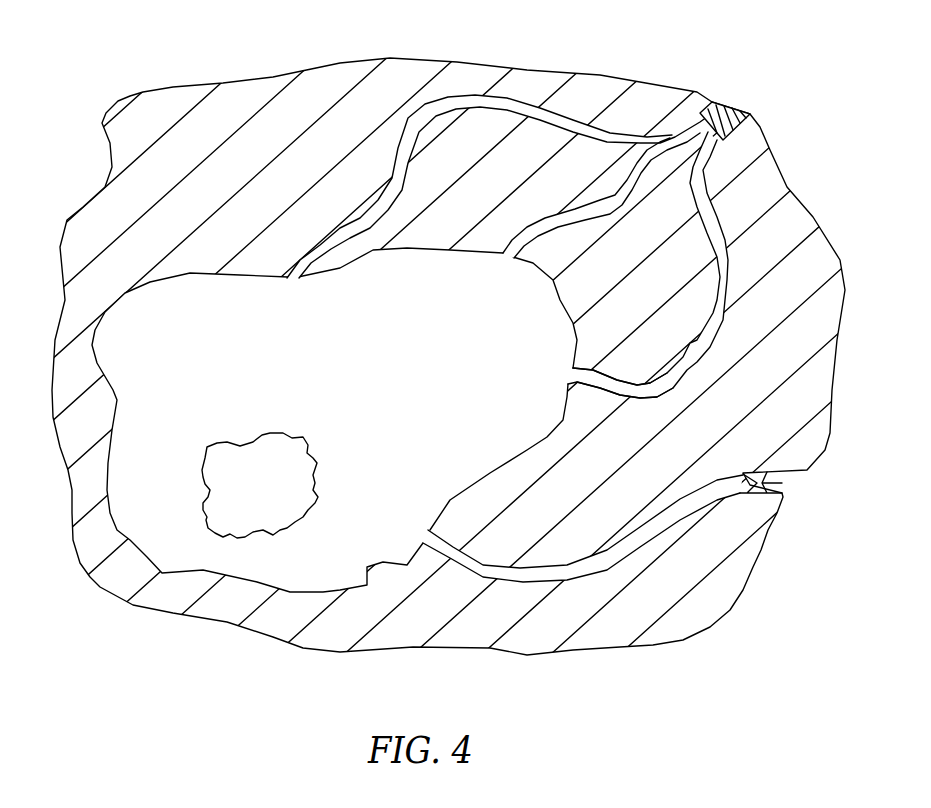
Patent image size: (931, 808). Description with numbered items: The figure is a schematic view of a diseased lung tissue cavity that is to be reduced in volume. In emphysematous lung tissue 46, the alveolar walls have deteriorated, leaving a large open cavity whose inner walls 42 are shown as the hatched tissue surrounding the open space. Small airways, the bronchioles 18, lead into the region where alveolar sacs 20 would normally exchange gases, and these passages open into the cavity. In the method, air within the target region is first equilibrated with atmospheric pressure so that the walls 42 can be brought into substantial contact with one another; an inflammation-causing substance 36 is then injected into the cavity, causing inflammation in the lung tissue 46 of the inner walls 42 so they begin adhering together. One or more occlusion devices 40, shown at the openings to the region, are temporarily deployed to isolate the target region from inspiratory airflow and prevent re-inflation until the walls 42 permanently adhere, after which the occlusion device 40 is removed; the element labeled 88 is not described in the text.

The bronchioles 18 is at (580, 293).
The alveolar sacs 20 is at (198, 262).
The inflammation-causing substance 36 is at (322, 406).
The occlusion device 40 is at (765, 90).
The cavity walls 42 is at (418, 560).
The lung tissue 46 is at (731, 423).
The conduit outlet 88 is at (640, 388).